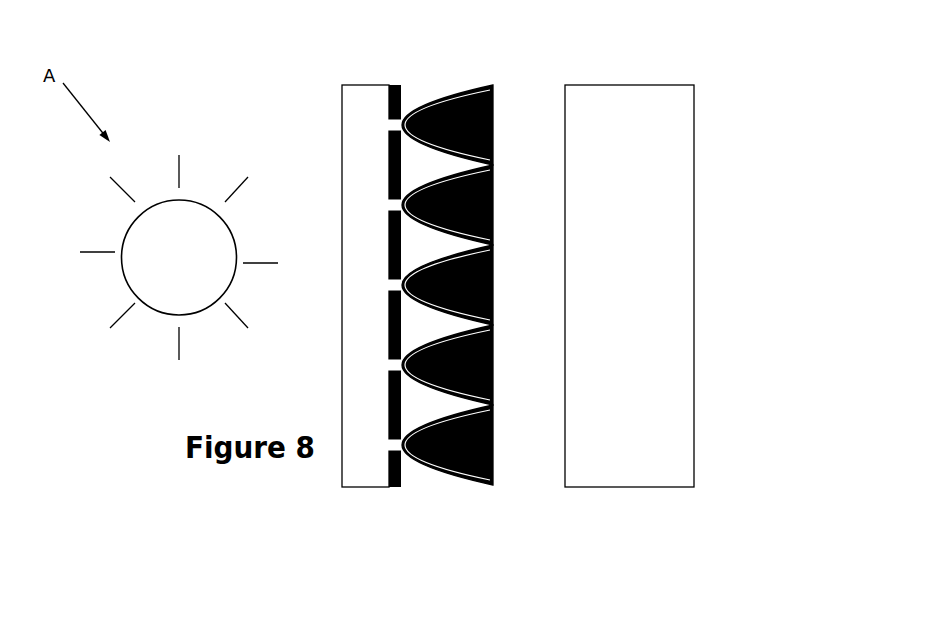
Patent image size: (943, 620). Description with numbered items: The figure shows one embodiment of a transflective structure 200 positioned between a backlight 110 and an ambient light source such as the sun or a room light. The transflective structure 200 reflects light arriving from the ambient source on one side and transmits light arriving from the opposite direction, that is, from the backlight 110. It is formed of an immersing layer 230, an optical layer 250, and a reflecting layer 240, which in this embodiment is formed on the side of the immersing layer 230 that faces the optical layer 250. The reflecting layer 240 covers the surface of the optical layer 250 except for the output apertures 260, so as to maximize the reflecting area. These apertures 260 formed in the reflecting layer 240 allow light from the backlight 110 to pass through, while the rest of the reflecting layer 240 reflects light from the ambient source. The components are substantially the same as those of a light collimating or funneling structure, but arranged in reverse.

The backlight 110 is at (682, 85).
The transflective structure 200 is at (409, 320).
The immersing layer 230 is at (341, 118).
The reflecting layer 240 is at (398, 98).
The optical layer 250 is at (493, 85).
The output aperture 260 is at (390, 443).